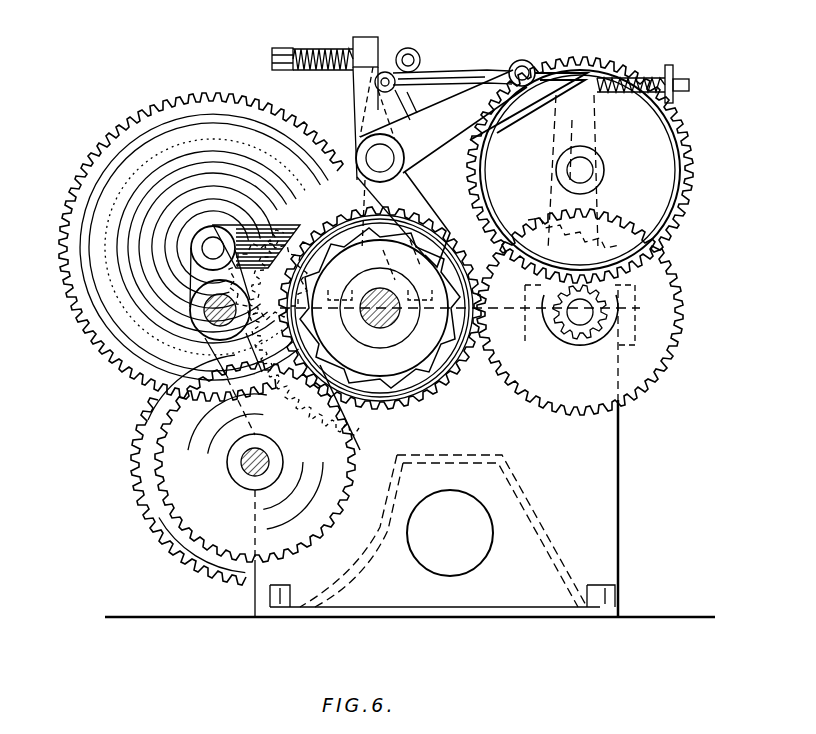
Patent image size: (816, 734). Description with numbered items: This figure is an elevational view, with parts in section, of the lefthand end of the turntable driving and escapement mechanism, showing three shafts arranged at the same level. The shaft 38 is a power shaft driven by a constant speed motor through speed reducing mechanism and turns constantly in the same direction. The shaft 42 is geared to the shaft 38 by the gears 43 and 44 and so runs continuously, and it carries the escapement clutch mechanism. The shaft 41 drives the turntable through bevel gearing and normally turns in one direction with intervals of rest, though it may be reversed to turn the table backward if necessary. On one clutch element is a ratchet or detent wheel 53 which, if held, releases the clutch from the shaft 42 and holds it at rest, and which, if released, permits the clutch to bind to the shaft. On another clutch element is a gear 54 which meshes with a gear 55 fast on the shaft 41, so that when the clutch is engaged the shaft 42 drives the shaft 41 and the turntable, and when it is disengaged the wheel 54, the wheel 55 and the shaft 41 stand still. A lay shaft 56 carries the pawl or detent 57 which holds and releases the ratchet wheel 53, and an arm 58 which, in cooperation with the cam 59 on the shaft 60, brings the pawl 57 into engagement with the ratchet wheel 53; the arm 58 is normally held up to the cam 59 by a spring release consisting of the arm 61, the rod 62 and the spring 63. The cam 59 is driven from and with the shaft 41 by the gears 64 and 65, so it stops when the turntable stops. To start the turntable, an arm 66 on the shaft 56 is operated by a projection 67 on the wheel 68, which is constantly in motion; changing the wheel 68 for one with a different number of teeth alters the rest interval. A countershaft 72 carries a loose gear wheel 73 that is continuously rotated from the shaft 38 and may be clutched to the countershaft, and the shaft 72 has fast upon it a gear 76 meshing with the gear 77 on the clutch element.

The power shaft 38 is at (204, 310).
The shaft 41 is at (583, 312).
The shaft 42 is at (380, 326).
The gear 43 is at (190, 320).
The gear 44 is at (266, 256).
The ratchet or detent wheel 53 is at (432, 392).
The gear 54 is at (456, 384).
The gear 55 is at (636, 396).
The lay shaft 56 is at (368, 145).
The pawl or detent 57 is at (426, 202).
The arm 58 is at (484, 92).
The cam 59 is at (685, 136).
The shaft 60 is at (593, 172).
The arm 61 is at (366, 110).
The rod 62 is at (446, 74).
The spring 63 is at (650, 76).
The gear 64 is at (688, 200).
The gear 65 is at (572, 333).
The arm 66 is at (368, 162).
The projection 67 is at (275, 228).
The wheel 68 is at (103, 168).
The countershaft 72 is at (240, 463).
The loose gear wheel 73 is at (140, 474).
The gear 76 is at (176, 527).
The gear 77 is at (350, 419).